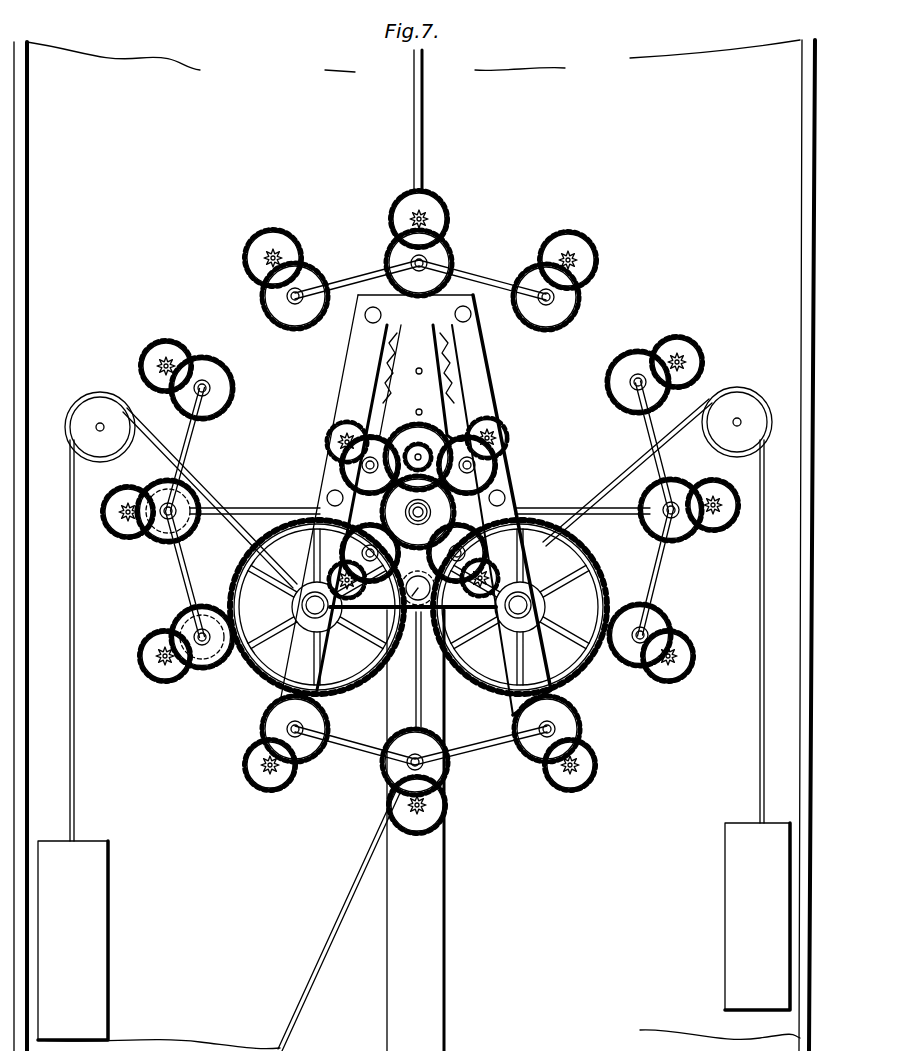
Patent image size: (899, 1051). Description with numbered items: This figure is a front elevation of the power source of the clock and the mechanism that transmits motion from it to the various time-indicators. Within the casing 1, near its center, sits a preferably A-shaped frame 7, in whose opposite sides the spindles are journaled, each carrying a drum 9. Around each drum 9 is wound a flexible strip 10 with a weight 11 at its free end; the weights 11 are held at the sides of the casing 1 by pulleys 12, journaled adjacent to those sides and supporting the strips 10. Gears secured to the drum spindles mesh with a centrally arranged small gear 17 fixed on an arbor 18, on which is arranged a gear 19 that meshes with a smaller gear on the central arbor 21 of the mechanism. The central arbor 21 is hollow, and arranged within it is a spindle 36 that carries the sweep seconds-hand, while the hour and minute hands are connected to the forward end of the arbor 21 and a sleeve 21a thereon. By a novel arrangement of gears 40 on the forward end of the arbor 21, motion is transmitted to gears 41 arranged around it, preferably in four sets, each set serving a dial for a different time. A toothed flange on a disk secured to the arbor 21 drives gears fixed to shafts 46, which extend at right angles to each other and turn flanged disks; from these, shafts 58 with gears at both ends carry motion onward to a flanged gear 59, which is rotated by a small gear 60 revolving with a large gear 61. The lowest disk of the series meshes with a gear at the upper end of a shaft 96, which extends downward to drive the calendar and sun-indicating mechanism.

The casing 1 is at (660, 160).
The A-shaped frame 7 is at (487, 372).
The drum 9 is at (292, 602).
The flexible strip 10 is at (74, 745).
The weight 11 is at (414, 931).
The pulley 12 is at (418, 424).
The small gear 17 is at (404, 566).
The arbor 18 is at (348, 643).
The gear 19 is at (428, 657).
The central arbor 21 is at (413, 510).
The sleeve 21a is at (431, 508).
The spindle 36 is at (462, 540).
The gears 40 is at (412, 505).
The gears 41 is at (482, 462).
The shaft 46 is at (262, 510).
The shaft 58 is at (178, 560).
The gear 59 is at (200, 664).
The small gear 60 is at (158, 662).
The large gear 61 is at (148, 648).
The shaft 96 is at (352, 890).